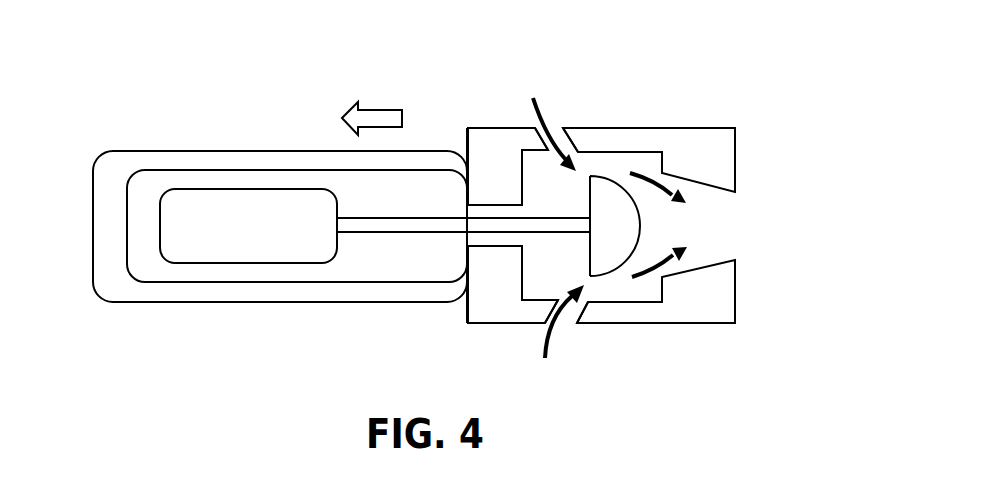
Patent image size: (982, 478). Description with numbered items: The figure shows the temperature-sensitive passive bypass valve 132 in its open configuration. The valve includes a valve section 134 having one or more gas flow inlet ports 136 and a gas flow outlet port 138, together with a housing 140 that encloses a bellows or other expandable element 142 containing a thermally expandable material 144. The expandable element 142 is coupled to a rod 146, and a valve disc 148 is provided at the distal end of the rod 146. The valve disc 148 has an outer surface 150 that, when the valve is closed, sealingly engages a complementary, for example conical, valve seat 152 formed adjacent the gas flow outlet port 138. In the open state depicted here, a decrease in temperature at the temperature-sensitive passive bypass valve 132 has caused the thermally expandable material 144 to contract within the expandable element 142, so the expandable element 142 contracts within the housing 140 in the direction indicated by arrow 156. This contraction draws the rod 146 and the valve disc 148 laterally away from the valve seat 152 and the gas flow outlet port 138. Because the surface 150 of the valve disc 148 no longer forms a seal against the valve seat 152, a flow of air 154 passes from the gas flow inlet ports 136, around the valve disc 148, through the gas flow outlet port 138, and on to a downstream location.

The temperature-sensitive passive bypass valve 132 is at (90, 104).
The valve section 134 is at (648, 118).
The gas flow inlet ports 136 is at (565, 108).
The gas flow outlet port 138 is at (756, 195).
The housing 140 is at (222, 290).
The expandable element 142 is at (247, 188).
The thermally expandable material 144 is at (272, 242).
The rod 146 is at (423, 228).
The valve disc 148 is at (570, 268).
The outer surface 150 is at (640, 227).
The valve seat 152 is at (713, 192).
The flow of air 154 is at (537, 110).
The arrow 156 is at (383, 108).